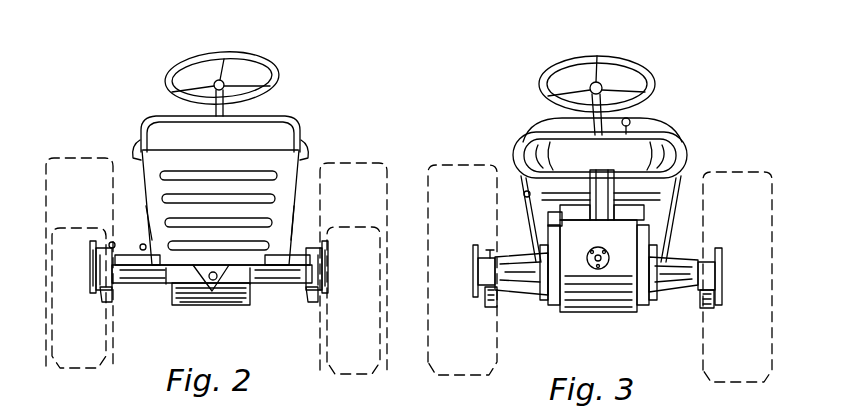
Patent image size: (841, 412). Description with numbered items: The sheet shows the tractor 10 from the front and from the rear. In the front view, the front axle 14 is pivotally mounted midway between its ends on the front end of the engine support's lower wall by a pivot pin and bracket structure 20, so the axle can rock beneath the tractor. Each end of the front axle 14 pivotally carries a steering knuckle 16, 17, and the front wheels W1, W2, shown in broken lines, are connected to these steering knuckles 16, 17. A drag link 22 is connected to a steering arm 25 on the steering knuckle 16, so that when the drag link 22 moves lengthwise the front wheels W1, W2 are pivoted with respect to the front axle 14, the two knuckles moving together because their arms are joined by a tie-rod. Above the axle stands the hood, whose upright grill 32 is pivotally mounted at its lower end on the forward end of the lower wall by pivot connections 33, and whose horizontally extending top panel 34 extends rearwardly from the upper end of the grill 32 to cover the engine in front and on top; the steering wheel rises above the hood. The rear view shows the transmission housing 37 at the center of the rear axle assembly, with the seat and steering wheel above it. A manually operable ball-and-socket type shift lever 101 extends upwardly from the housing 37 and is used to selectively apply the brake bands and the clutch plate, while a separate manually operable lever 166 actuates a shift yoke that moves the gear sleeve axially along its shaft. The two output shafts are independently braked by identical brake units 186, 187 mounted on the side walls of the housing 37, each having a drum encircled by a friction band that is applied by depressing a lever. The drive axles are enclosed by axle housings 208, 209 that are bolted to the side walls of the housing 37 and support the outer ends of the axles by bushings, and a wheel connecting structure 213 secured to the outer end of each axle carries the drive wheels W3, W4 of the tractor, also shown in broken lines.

In FIG. 2, the tractor 10 is at (301, 119).
In FIG. 2, the front axle 14 is at (158, 272).
In FIG. 2, the steering knuckle 16 is at (112, 297).
In FIG. 3, the steering knuckle 16 is at (702, 302).
In FIG. 2, the steering knuckle 17 is at (316, 298).
In FIG. 3, the steering knuckle 17 is at (494, 305).
In FIG. 2, the pivot pin and bracket structure 20 is at (212, 292).
In FIG. 2, the drag link 22 is at (144, 224).
In FIG. 2, the steering arm 25 is at (134, 252).
In FIG. 2, the grill 32 is at (286, 228).
In FIG. 2, the pivot connections 33 is at (168, 286).
In FIG. 2, the top panel 34 is at (152, 120).
In FIG. 3, the housing 37 is at (600, 312).
In FIG. 3, the shift lever 101 is at (630, 125).
In FIG. 3, the lever 166 is at (524, 195).
In FIG. 3, the brake unit 186 is at (547, 232).
In FIG. 3, the brake unit 187 is at (655, 248).
In FIG. 3, the axle housing 208 is at (547, 294).
In FIG. 3, the axle housing 209 is at (668, 294).
In FIG. 3, the wheel connecting structure 213 is at (474, 272).
In FIG. 2, the front wheel W1 is at (52, 242).
In FIG. 2, the front wheel W2 is at (380, 272).
In FIG. 2, the drive wheel W3 is at (352, 163).
In FIG. 3, the drive wheel W3 is at (457, 165).
In FIG. 2, the drive wheel W4 is at (74, 157).
In FIG. 3, the drive wheel W4 is at (738, 172).